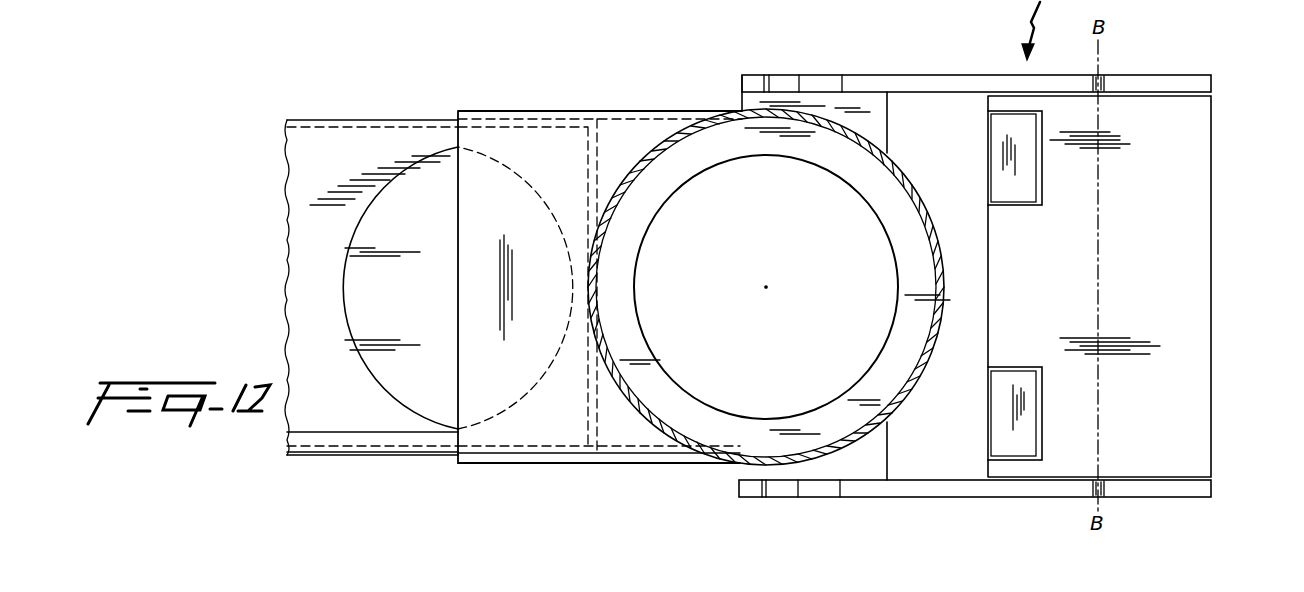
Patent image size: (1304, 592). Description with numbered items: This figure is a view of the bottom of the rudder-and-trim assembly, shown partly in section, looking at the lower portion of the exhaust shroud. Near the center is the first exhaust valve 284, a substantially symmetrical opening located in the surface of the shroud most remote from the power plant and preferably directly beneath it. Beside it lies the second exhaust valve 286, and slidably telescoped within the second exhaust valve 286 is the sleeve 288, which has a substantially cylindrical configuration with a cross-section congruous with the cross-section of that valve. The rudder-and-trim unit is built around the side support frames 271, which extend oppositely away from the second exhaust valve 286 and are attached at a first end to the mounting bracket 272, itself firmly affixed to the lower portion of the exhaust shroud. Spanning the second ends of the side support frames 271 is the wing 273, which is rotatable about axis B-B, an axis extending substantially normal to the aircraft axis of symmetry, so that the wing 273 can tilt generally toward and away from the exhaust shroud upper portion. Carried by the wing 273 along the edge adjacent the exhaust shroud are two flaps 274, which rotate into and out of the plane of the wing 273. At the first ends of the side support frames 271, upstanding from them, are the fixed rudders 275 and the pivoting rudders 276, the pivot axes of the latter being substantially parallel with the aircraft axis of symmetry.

The side support frames 271 is at (930, 78).
The mounting bracket 272 is at (823, 105).
The wing 273 is at (1192, 217).
The flaps 274 is at (1002, 126).
The fixed rudders 275 is at (787, 84).
The pivoting rudders 276 is at (744, 83).
The first exhaust valve 284 is at (690, 395).
The second exhaust valve 286 is at (495, 110).
The sleeve 288 is at (414, 223).